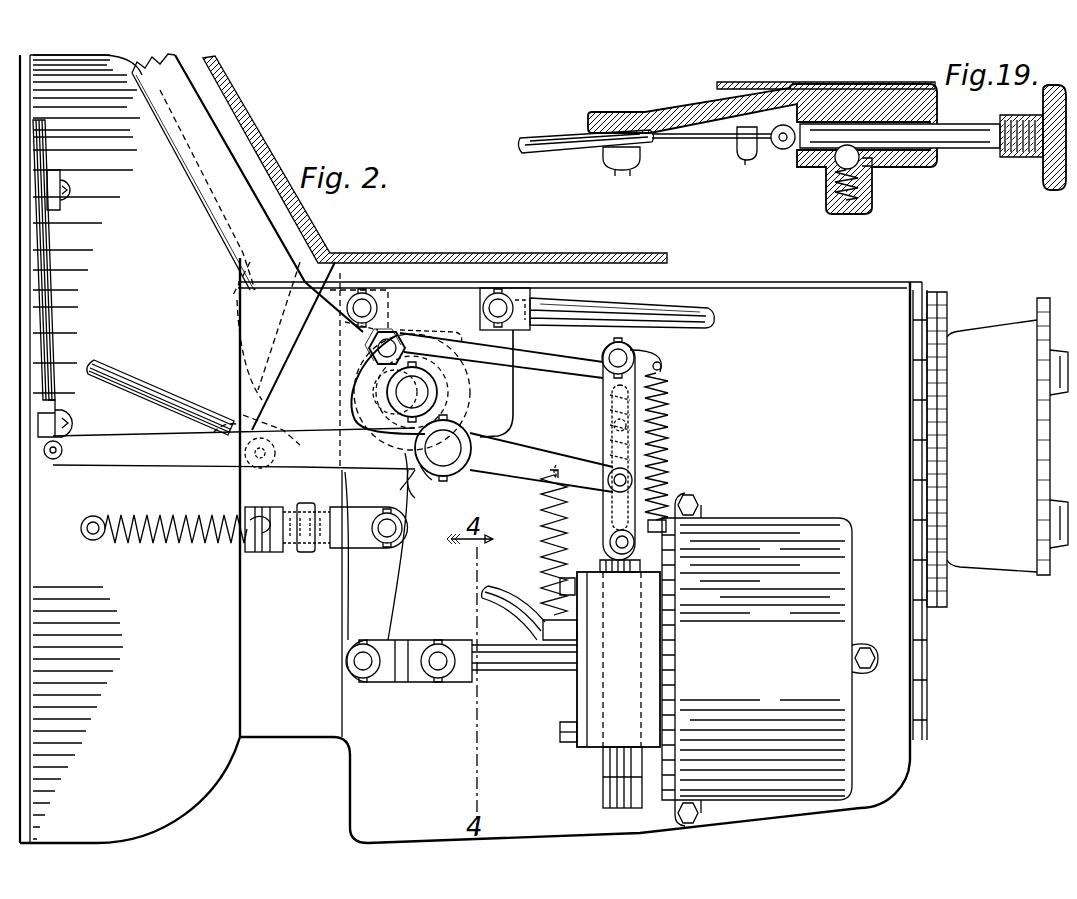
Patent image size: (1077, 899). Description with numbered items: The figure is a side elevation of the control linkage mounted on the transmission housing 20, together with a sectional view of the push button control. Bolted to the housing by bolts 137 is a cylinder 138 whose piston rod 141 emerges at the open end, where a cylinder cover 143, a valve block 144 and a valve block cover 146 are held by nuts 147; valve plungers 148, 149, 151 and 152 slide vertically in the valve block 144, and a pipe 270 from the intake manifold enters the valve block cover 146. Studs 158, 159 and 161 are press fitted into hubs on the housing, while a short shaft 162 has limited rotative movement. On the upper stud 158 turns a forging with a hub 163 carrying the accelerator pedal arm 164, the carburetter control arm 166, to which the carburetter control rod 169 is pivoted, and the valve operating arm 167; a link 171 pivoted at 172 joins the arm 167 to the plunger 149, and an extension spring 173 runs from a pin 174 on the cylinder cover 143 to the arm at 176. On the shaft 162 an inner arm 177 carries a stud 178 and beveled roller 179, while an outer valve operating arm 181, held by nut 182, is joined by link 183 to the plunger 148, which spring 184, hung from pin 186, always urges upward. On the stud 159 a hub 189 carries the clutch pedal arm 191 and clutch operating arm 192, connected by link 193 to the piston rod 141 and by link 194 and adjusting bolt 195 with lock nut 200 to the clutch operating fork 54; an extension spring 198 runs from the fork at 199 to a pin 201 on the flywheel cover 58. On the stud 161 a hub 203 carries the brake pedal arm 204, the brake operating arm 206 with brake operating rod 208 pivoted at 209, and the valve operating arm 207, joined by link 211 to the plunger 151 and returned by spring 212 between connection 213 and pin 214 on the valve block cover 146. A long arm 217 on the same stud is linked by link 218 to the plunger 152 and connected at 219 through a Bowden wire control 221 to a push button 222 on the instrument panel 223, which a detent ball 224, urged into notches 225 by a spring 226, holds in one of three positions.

In FIG. 2, the transmission housing 20 is at (906, 779).
In FIG. 2, the clutch operating fork 54 is at (264, 552).
In FIG. 2, the flywheel cover 58 is at (238, 618).
In FIG. 2, the bolts 137 is at (698, 500).
In FIG. 2, the cylinder 138 is at (850, 625).
In FIG. 2, the piston rod 141 is at (555, 675).
In FIG. 2, the cylinder cover 143 is at (672, 800).
In FIG. 2, the valve block 144 is at (602, 752).
In FIG. 2, the valve block cover 146 is at (575, 698).
In FIG. 2, the nuts 147 is at (562, 737).
In FIG. 2, the valve plunger 148 is at (603, 770).
In FIG. 2, the valve plunger 149 is at (603, 785).
In FIG. 2, the valve plunger 151 is at (603, 797).
In FIG. 2, the valve plunger 152 is at (603, 810).
In FIG. 2, the stud 158 is at (372, 300).
In FIG. 2, the stud 159 is at (434, 384).
In FIG. 2, the stud 161 is at (455, 468).
In FIG. 2, the short shaft 162 is at (400, 350).
In FIG. 2, the hub 163 is at (385, 300).
In FIG. 2, the accelerator pedal arm 164 is at (225, 200).
In FIG. 2, the carburetter control arm 166 is at (290, 402).
In FIG. 2, the valve operating arm 167 is at (496, 292).
In FIG. 2, the carburetter control rod 169 is at (196, 393).
In FIG. 2, the link 171 is at (606, 395).
In FIG. 2, the pivot 172 is at (632, 356).
In FIG. 2, the extension spring 173 is at (672, 420).
In FIG. 2, the pin 174 is at (672, 530).
In FIG. 2, the spring attachment 176 is at (662, 367).
In FIG. 2, the arm 177 is at (350, 360).
In FIG. 2, the stud 178 is at (365, 440).
In FIG. 2, the beveled roller 179 is at (275, 437).
In FIG. 2, the valve operating arm 181 is at (431, 325).
In FIG. 2, the nut 182 is at (377, 315).
In FIG. 2, the link 183 is at (606, 411).
In FIG. 2, the extension spring 184 is at (636, 440).
In FIG. 2, the pin 186 is at (620, 419).
In FIG. 2, the hub 189 is at (436, 397).
In FIG. 2, the clutch pedal arm 191 is at (233, 223).
In FIG. 2, the clutch operating arm 192 is at (390, 597).
In FIG. 2, the link 193 is at (400, 682).
In FIG. 2, the link 194 is at (322, 552).
In FIG. 2, the adjusting bolt 195 is at (247, 548).
In FIG. 2, the extension spring 198 is at (150, 545).
In FIG. 2, the spring connection 199 is at (276, 515).
In FIG. 2, the lock nut 200 is at (305, 552).
In FIG. 2, the pin 201 is at (94, 518).
In FIG. 2, the hub 203 is at (448, 465).
In FIG. 2, the brake pedal arm 204 is at (237, 243).
In FIG. 2, the brake operating arm 206 is at (510, 392).
In FIG. 2, the valve operating arm 207 is at (558, 452).
In FIG. 2, the brake operating rod 208 is at (590, 306).
In FIG. 2, the pivot 209 is at (550, 301).
In FIG. 2, the link 211 is at (612, 492).
In FIG. 2, the extension spring 212 is at (545, 541).
In FIG. 2, the spring connection 213 is at (565, 462).
In FIG. 2, the pin 214 is at (548, 656).
In FIG. 2, the long arm 217 is at (410, 482).
In FIG. 2, the link 218 is at (612, 530).
In FIG. 2, the connection 219 is at (54, 462).
In FIG. 2, the Bowden wire control 221 is at (55, 340).
In FIG. 19, the Bowden wire control 221 is at (556, 155).
In FIG. 19, the push button 222 is at (1046, 160).
In FIG. 19, the instrument panel 223 is at (928, 168).
In FIG. 19, the detent ball 224 is at (838, 165).
In FIG. 19, the notches 225 is at (868, 170).
In FIG. 19, the spring 226 is at (866, 190).
In FIG. 2, the pipe 270 is at (508, 606).